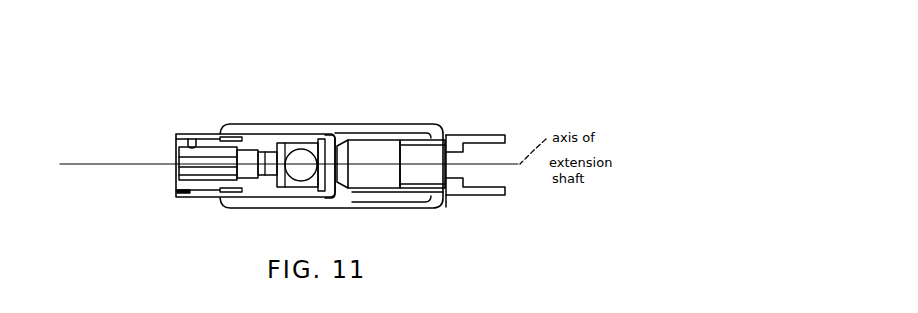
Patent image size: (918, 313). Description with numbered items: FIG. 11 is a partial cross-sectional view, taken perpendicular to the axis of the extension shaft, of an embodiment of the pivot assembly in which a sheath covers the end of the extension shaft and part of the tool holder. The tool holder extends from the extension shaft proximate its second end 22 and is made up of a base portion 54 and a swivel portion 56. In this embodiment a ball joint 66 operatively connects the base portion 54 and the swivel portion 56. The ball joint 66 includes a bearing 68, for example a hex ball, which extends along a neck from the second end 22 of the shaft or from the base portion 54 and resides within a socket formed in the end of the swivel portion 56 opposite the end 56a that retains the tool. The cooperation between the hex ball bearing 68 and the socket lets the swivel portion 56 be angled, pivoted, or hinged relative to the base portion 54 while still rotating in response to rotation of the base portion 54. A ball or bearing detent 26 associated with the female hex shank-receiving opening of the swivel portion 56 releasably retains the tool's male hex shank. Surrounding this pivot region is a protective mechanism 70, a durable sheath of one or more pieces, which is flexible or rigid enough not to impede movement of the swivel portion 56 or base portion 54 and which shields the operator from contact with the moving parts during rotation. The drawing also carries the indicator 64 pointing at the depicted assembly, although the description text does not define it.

The second end 22 is at (415, 138).
The ball or bearing detent 26 is at (194, 141).
The base portion 54 is at (350, 165).
The swivel portion 56 is at (202, 135).
The end of the swivel portion 56a is at (178, 199).
The connector assembly 64 is at (370, 217).
The ball joint 66 is at (275, 190).
The bearing 68 is at (282, 143).
The protective mechanism 70 is at (287, 123).